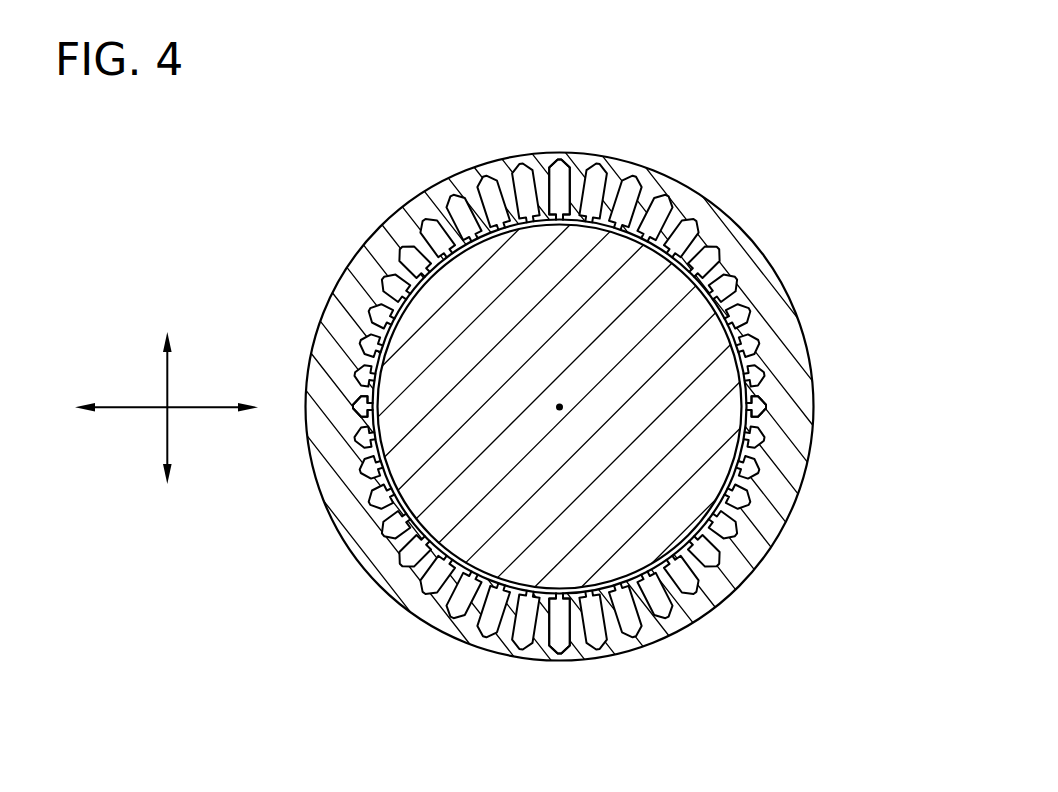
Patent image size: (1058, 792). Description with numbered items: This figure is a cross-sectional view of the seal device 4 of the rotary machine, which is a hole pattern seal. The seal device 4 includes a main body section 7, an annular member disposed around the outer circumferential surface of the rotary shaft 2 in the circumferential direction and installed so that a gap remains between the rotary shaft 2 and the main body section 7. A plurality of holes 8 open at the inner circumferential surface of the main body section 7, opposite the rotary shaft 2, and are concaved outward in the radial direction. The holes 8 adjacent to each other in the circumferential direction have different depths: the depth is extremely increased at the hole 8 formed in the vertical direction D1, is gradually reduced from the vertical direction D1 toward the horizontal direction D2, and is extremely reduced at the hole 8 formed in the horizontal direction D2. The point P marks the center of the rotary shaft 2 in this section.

The seal device 4 is at (763, 158).
The main body section 7 is at (790, 408).
The holes 8 is at (722, 560).
The rotary shaft 2 is at (703, 480).
The center point P is at (561, 404).
The vertical direction D1 is at (168, 373).
The horizontal direction D2 is at (203, 409).